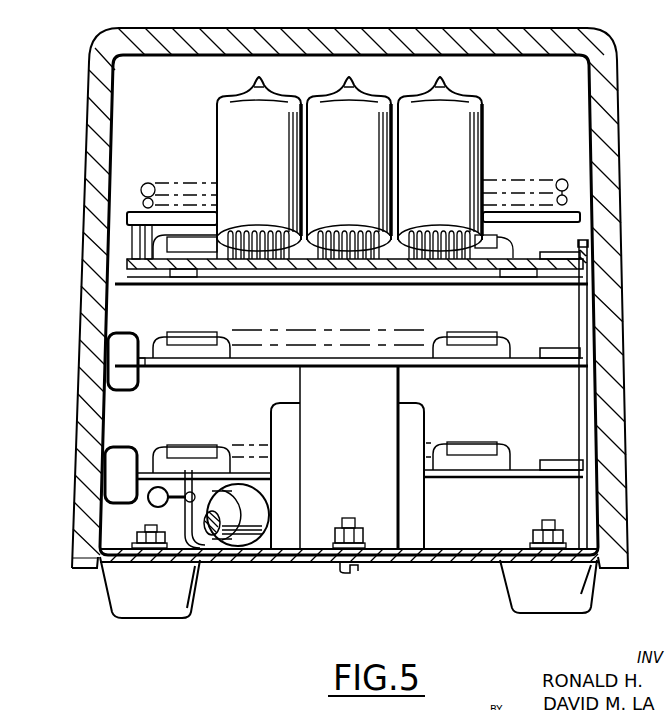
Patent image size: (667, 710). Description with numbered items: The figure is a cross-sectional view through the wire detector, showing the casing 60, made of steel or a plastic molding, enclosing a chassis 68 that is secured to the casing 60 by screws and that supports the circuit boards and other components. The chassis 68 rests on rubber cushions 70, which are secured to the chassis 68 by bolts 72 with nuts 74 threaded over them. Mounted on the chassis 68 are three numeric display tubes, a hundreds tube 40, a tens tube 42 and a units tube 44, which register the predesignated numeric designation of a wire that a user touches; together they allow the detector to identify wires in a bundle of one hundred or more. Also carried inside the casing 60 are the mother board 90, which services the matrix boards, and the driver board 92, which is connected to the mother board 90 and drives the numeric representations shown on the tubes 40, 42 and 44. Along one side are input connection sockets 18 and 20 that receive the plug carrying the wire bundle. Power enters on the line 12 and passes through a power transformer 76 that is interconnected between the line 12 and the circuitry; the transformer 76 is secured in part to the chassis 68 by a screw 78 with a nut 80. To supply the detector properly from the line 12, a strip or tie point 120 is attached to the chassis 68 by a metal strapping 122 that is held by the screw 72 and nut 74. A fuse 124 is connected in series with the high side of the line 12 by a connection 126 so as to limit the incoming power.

The line 12 is at (238, 518).
The socket 18 is at (127, 369).
The socket 20 is at (115, 470).
The hundreds tube 40 is at (215, 127).
The tens tube 42 is at (378, 98).
The units tube 44 is at (483, 137).
The casing 60 is at (623, 345).
The chassis 68 is at (107, 567).
The rubber cushions 70 is at (152, 620).
The bolt 72 is at (548, 528).
The nut 74 is at (530, 540).
The power transformer 76 is at (378, 532).
The screw 78 is at (355, 573).
The nut 80 is at (333, 530).
The mother board 90 is at (593, 442).
The driver board 92 is at (527, 260).
The strip or tie point 120 is at (187, 525).
The metal strapping 122 is at (148, 550).
The fuse 124 is at (152, 488).
The connection 126 is at (178, 490).